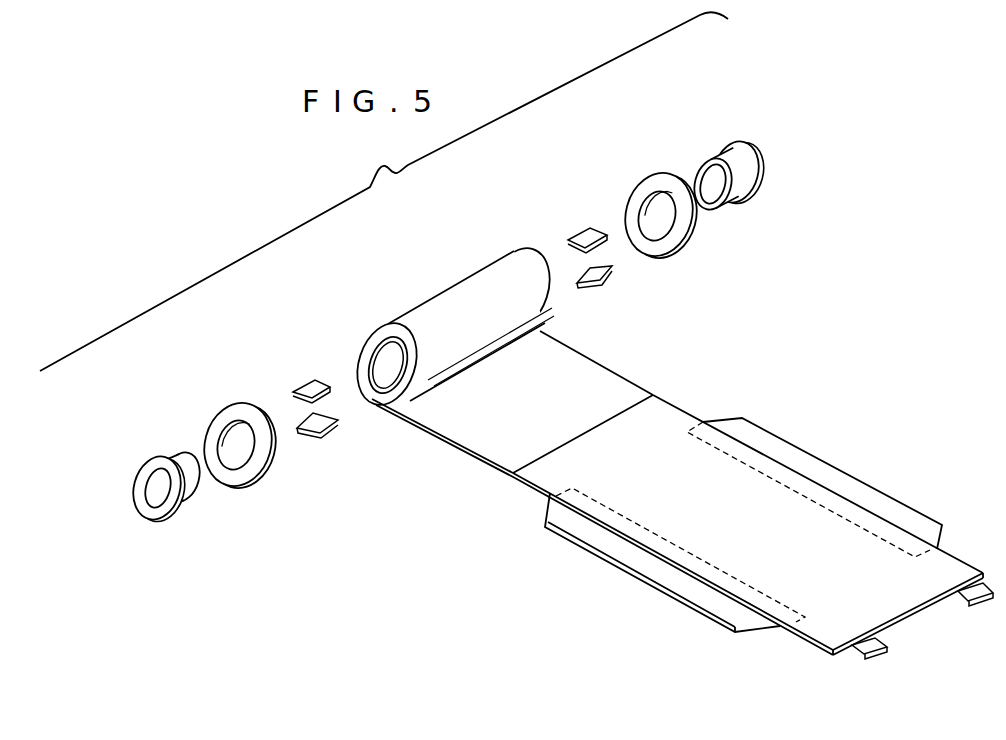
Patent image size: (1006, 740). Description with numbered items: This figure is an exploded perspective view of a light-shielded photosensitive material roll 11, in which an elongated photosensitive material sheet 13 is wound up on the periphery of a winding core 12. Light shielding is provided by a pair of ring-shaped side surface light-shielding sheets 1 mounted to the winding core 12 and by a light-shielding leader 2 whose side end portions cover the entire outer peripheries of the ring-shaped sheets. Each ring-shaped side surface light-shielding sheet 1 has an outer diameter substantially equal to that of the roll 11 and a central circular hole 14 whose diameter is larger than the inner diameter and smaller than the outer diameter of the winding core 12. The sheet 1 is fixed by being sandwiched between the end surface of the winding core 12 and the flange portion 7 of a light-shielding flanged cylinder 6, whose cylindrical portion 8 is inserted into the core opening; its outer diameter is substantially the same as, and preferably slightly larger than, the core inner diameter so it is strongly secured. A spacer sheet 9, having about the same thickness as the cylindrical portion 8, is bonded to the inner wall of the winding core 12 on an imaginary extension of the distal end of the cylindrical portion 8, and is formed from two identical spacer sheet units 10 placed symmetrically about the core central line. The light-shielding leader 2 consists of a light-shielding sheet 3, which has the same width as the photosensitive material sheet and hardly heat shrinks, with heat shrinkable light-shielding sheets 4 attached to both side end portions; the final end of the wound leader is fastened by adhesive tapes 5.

The ring-shaped side surface light-shielding sheet 1 is at (652, 183).
The light-shielding leader 2 is at (753, 544).
The light-shielding sheet 3 is at (947, 565).
The heat shrinkable light-shielding sheet 4 is at (800, 457).
The adhesive tape 5 is at (868, 648).
The light-shielding flanged cylinder 6 is at (758, 175).
The flange portion 7 is at (157, 512).
The cylindrical portion 8 is at (192, 492).
The spacer sheet 9 is at (588, 229).
The spacer sheet unit 10 is at (471, 330).
The photosensitive material roll 11 is at (384, 191).
The winding core 12 is at (364, 346).
The photosensitive material sheet 13 is at (481, 434).
The circular hole 14 is at (247, 463).